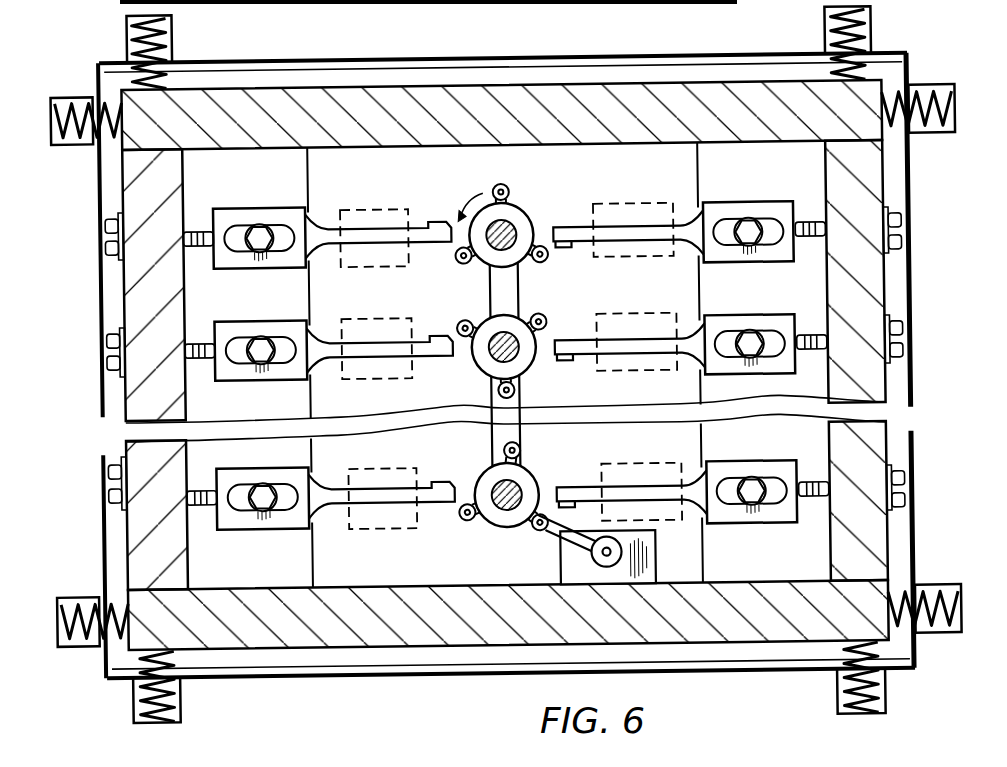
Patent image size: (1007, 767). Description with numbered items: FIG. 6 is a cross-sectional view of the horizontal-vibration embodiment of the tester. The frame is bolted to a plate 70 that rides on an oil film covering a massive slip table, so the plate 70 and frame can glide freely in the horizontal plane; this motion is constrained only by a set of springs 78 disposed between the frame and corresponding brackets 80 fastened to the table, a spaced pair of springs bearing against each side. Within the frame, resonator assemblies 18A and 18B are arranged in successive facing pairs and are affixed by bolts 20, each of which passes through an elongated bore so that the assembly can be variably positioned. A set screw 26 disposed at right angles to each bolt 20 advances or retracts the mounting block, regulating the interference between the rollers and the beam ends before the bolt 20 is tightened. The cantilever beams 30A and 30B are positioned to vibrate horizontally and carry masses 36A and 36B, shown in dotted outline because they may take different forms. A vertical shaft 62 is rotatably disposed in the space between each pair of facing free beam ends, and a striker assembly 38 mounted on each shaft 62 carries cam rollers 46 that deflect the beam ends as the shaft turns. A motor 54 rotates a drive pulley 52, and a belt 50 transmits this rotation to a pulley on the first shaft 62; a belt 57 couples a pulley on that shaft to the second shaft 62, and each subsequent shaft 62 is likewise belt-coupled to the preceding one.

The plate 70 is at (672, 66).
The springs 78 is at (79, 95).
The brackets 80 is at (72, 140).
The resonator assembly 18A is at (322, 204).
The resonator assembly 18B is at (677, 197).
The bolt 20 is at (747, 222).
The set screw 26 is at (812, 226).
The cantilever beam 30A is at (329, 246).
The cantilever beam 30B is at (630, 363).
The mass 36A is at (385, 204).
The mass 36B is at (646, 202).
The striker assembly 38 is at (528, 211).
The cam roller 46 is at (503, 184).
The vertical shaft 62 is at (491, 247).
The belt 57 is at (522, 432).
The belt 50 is at (553, 540).
The drive pulley 52 is at (652, 537).
The motor 54 is at (653, 577).